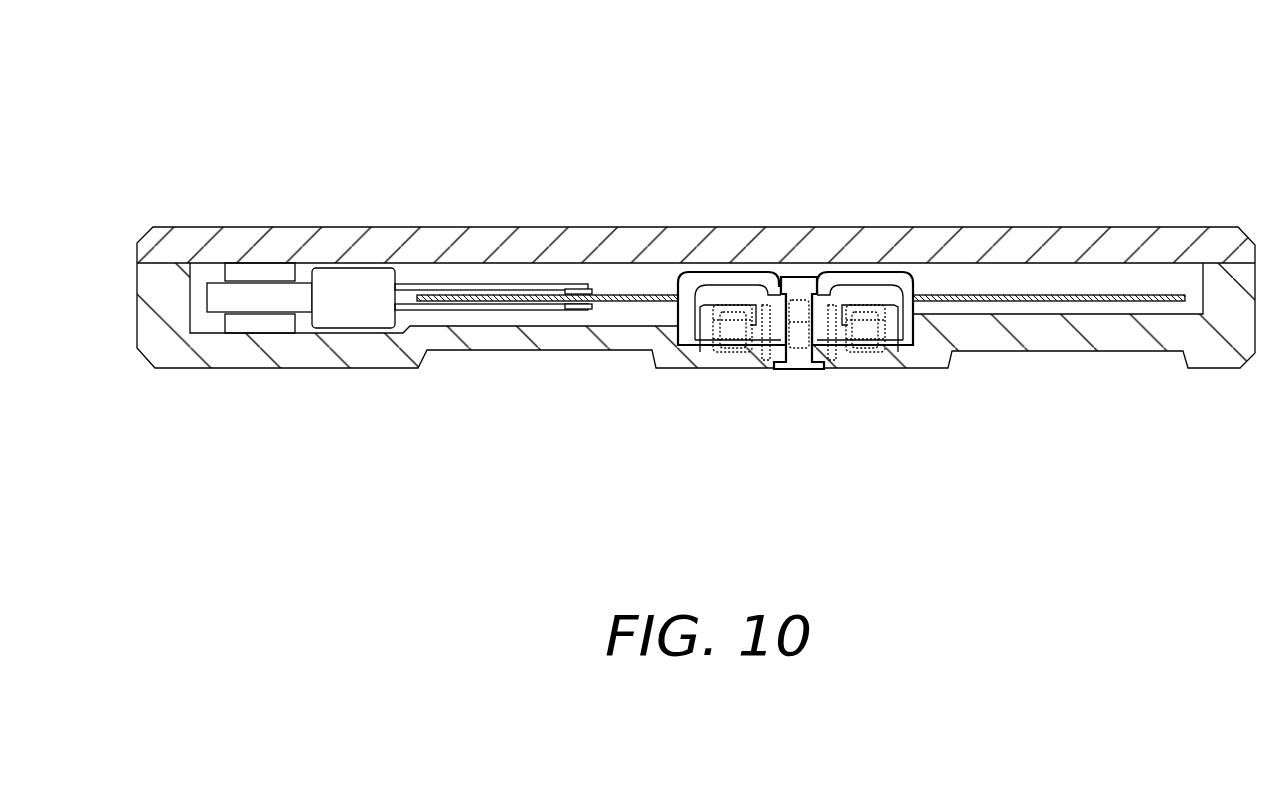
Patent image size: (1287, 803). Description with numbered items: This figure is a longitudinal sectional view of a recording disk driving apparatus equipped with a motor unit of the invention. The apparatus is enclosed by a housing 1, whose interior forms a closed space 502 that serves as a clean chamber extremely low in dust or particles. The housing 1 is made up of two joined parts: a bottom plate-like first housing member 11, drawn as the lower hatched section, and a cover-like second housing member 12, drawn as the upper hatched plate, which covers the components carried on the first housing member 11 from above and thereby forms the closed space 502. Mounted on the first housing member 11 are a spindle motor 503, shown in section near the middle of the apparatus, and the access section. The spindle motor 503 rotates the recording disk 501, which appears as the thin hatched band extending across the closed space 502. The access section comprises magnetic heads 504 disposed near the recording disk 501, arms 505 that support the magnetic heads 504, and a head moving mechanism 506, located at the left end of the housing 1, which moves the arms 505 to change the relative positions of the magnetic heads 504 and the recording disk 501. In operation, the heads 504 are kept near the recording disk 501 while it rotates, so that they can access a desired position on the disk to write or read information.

The housing 1 is at (1257, 227).
The first housing member 11 is at (173, 333).
The second housing member 12 is at (260, 245).
The recording disk 501 is at (1117, 299).
The closed space 502 is at (1152, 280).
The spindle motor 503 is at (872, 332).
The magnetic heads 504 is at (575, 292).
The arms 505 is at (488, 288).
The head moving mechanism 506 is at (347, 298).